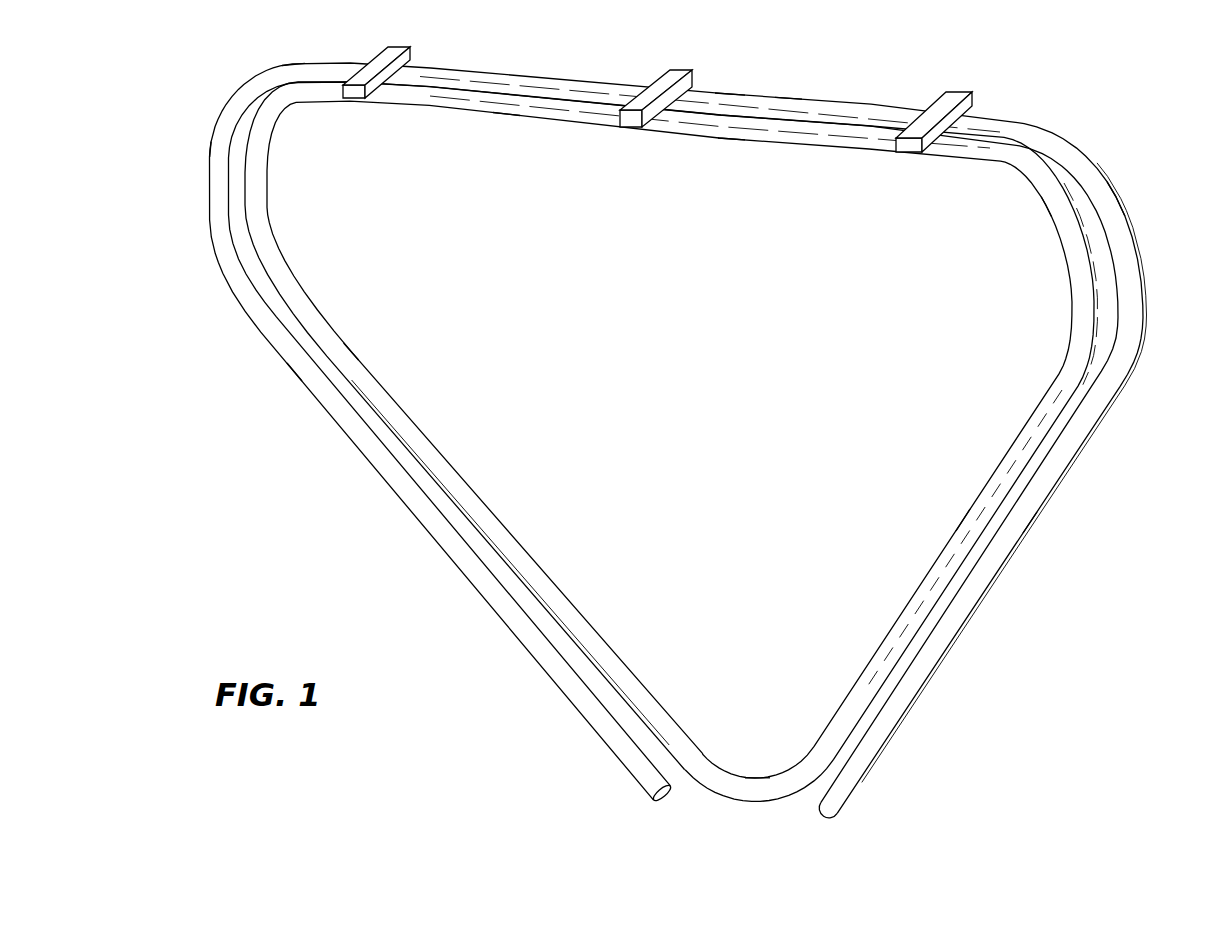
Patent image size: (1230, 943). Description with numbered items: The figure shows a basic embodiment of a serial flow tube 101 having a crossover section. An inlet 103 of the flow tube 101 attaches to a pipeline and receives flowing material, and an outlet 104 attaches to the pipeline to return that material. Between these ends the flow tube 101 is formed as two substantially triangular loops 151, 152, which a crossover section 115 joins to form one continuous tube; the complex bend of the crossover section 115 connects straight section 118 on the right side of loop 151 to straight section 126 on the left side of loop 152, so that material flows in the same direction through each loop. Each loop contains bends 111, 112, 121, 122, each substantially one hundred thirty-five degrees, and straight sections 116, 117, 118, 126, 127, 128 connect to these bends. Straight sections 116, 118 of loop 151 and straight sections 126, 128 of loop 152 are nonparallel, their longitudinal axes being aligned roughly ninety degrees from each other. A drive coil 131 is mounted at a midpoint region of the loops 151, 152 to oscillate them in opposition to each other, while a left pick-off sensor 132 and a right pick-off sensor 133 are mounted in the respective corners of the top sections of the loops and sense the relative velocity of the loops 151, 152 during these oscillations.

The serial flow tube 101 is at (349, 516).
The inlet 103 is at (667, 802).
The outlet 104 is at (817, 820).
The bend 111 is at (214, 146).
The bend 112 is at (1053, 246).
The crossover section 115 is at (764, 776).
The straight section 116 is at (296, 368).
The straight section 117 is at (505, 120).
The straight section 118 is at (966, 520).
The bend 121 is at (292, 62).
The bend 122 is at (1114, 195).
The straight section 126 is at (350, 351).
The straight section 127 is at (788, 97).
The straight section 128 is at (1028, 522).
The drive coil 131 is at (665, 82).
The left pick-off sensor 132 is at (400, 52).
The right pick-off sensor 133 is at (958, 92).
The loop 151 is at (730, 136).
The loop 152 is at (730, 100).